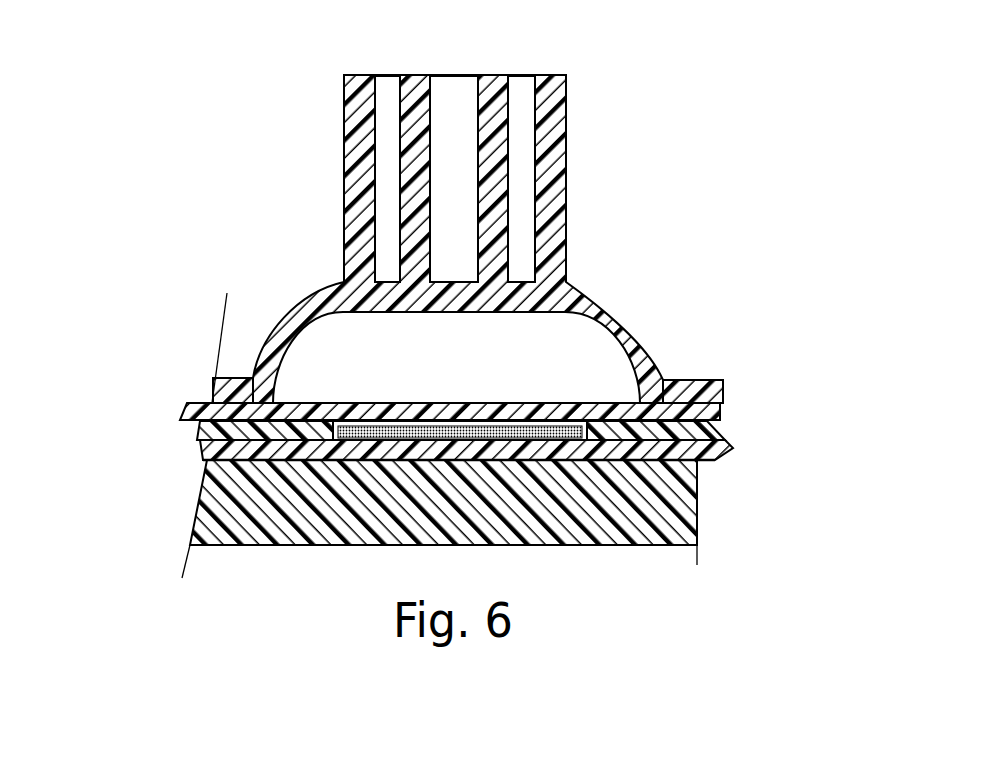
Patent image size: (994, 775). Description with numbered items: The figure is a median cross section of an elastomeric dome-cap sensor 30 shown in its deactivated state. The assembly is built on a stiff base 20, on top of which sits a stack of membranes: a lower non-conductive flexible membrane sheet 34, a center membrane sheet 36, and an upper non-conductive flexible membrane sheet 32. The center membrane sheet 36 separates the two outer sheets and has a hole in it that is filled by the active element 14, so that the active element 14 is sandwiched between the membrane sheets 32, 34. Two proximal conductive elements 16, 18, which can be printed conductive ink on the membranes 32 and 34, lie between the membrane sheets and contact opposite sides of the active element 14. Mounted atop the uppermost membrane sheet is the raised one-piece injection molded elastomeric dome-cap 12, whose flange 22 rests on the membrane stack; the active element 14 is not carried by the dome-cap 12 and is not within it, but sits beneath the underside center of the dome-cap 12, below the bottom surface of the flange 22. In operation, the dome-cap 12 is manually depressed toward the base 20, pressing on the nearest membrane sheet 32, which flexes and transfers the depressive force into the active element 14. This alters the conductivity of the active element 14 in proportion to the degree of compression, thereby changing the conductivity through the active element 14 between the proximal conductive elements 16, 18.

The dome-cap 12 is at (556, 90).
The active element 14 is at (447, 433).
The proximal conductive element 16 is at (700, 416).
The proximal conductive element 18 is at (230, 446).
The stiff base 20 is at (520, 525).
The flange 22 is at (244, 400).
The elastomeric dome-cap sensor 30 is at (657, 168).
The non-conductive flexible membrane sheet 32 is at (212, 407).
The non-conductive flexible membrane sheet 34 is at (217, 455).
The center membrane sheet 36 is at (212, 437).